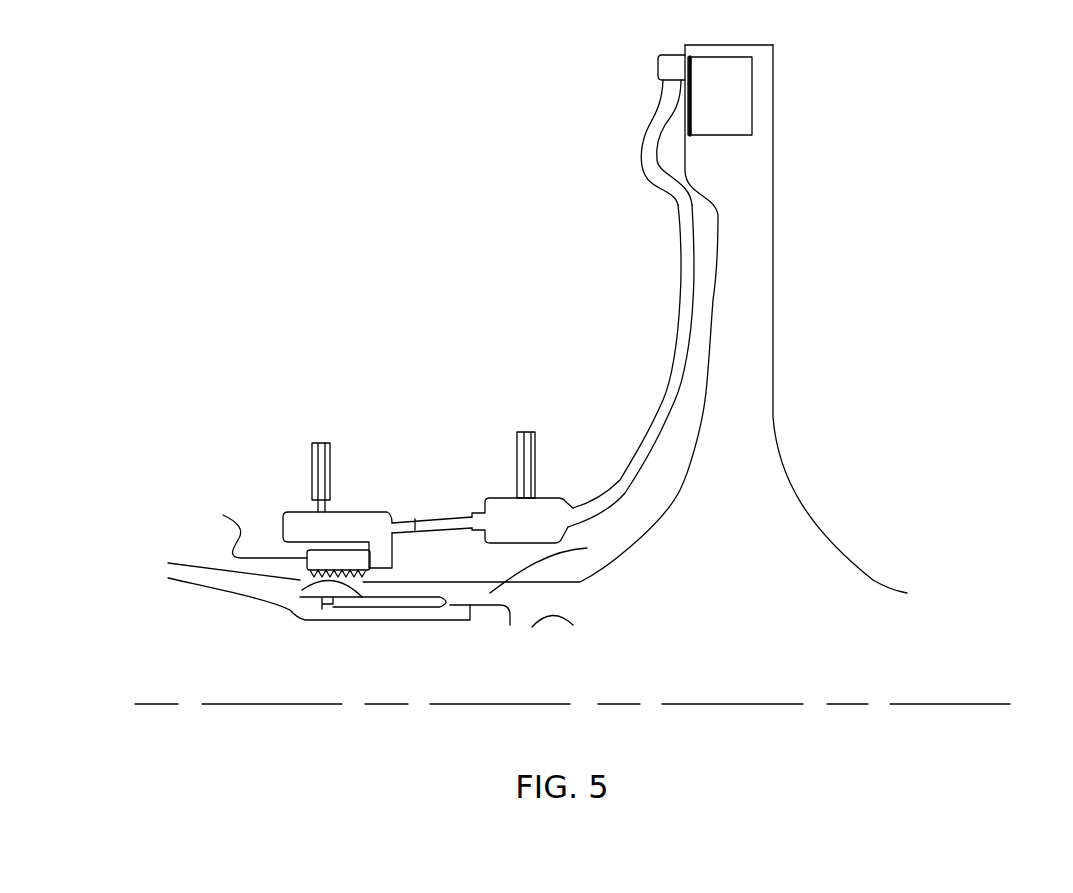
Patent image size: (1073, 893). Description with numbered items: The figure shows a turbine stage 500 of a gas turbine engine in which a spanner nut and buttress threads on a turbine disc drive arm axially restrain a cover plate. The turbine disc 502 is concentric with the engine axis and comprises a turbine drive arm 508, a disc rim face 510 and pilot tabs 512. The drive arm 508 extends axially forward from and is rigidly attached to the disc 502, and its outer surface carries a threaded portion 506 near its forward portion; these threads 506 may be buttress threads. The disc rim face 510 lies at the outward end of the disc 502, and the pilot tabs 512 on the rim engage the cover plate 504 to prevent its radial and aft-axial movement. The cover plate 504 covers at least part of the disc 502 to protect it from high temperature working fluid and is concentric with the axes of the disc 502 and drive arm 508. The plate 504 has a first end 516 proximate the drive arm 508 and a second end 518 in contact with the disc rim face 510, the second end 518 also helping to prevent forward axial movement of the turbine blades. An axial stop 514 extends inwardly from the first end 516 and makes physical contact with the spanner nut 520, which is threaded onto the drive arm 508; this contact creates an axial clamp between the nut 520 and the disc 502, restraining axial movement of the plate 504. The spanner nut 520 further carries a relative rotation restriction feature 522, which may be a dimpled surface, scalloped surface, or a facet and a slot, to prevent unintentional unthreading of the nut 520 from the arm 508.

The turbine stage 500 is at (345, 168).
The turbine disc 502 is at (760, 408).
The cover plate 504 is at (664, 268).
The threaded portion 506 is at (360, 585).
The turbine drive arm 508 is at (587, 548).
The disc rim face 510 is at (706, 111).
The pilot tabs 512 is at (657, 63).
The axial stop 514 is at (385, 553).
The first end 516 is at (330, 383).
The second end 518 is at (616, 122).
The spanner nut 520 is at (247, 525).
The relative rotation restriction feature 522 is at (367, 550).